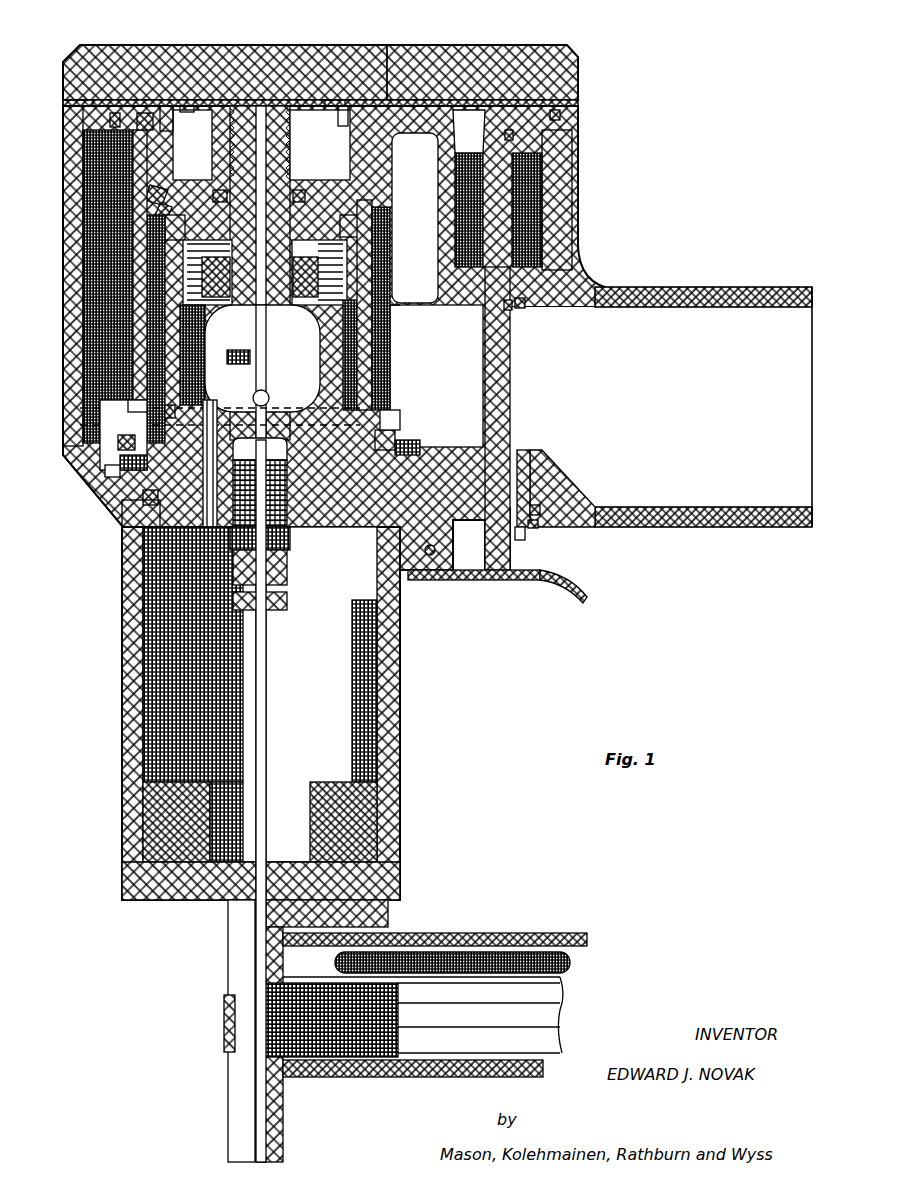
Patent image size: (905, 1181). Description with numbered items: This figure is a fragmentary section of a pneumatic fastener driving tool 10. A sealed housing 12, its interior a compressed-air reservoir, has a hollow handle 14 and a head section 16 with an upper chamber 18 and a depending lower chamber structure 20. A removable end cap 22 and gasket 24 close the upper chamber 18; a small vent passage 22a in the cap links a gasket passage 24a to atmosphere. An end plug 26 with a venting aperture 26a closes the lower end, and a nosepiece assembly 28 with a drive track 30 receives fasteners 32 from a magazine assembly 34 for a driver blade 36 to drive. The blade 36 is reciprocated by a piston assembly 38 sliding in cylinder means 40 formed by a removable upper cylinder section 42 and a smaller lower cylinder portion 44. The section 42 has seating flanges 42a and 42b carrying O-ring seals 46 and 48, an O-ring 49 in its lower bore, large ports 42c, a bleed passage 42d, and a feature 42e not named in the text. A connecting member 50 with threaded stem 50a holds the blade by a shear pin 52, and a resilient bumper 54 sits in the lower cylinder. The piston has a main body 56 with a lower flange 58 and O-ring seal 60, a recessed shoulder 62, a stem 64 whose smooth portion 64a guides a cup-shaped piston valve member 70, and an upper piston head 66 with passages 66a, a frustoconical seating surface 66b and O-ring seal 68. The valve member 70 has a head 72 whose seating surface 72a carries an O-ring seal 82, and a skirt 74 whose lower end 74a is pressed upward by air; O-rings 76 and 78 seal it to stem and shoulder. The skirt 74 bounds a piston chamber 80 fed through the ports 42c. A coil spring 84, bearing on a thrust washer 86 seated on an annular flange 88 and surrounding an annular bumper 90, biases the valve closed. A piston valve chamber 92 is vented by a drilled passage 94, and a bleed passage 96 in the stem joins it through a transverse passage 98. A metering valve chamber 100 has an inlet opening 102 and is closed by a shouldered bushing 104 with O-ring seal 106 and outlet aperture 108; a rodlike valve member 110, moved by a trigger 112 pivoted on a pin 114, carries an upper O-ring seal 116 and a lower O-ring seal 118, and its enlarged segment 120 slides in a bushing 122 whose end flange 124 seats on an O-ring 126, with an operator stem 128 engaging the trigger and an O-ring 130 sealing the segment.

The fastener driving tool 10 is at (513, 728).
The housing 12 is at (781, 533).
The hollow handle 14 is at (783, 287).
The head section 16 is at (122, 680).
The upper chamber 18 is at (78, 305).
The lower chamber structure 20 is at (398, 758).
The upper end cap 22 is at (543, 53).
The vent passage 22a is at (392, 62).
The gasket 24 is at (582, 103).
The passage 24a is at (337, 105).
The end plug 26 is at (135, 898).
The central aperture 26a is at (232, 910).
The nosepiece assembly 28 is at (228, 1090).
The drive track 30 is at (257, 942).
The fasteners 32 is at (268, 997).
The magazine assembly 34 is at (445, 925).
The driver blade 36 is at (266, 742).
The piston assembly 38 is at (317, 392).
The cylinder means 40 is at (197, 570).
The upper cylinder section 42 is at (143, 248).
The upper seating flange 42a is at (85, 107).
The lower seating flange 42b is at (135, 473).
The ports 42c is at (133, 407).
The bleed passage 42d is at (417, 443).
The body port 42e is at (395, 415).
The lower cylinder portion 44 is at (355, 738).
The O-ring seal 46 is at (110, 118).
The O-ring seal 48 is at (150, 497).
The O-ring 49 is at (118, 443).
The connecting member 50 is at (300, 563).
The threaded stem 50a is at (290, 540).
The shear pin 52 is at (300, 590).
The bumper 54 is at (155, 805).
The main body 56 is at (292, 560).
The annular flange 58 is at (150, 527).
The O-ring seal 60 is at (147, 517).
The recessed shoulder 62 is at (388, 430).
The stem portion 64 is at (285, 358).
The smooth cylindrical portion 64a is at (330, 187).
The upper piston head 66 is at (170, 112).
The passages 66a is at (187, 108).
The frustoconical seating surface 66b is at (163, 193).
The O-ring seal 68 is at (147, 110).
The piston valve member 70 is at (153, 277).
The valve head 72 is at (167, 223).
The frustoconical surface 72a is at (367, 190).
The skirt 74 is at (180, 352).
The lower end of skirt 74a is at (87, 477).
The upper O-ring seal 76 is at (213, 196).
The lower O-ring 78 is at (167, 410).
The piston chamber 80 is at (147, 327).
The O-ring seal 82 is at (167, 200).
The coil spring 84 is at (340, 260).
The thrust washer 86 is at (395, 317).
The annular flange 88 is at (357, 337).
The annular bumper 90 is at (345, 228).
The piston valve chamber 92 is at (390, 365).
The drilled passage 94 is at (207, 527).
The bleed passage 96 is at (266, 330).
The transverse passage 98 is at (227, 358).
The metering valve chamber 100 is at (530, 192).
The inlet opening 102 is at (525, 303).
The shouldered bushing 104 is at (540, 145).
The O-ring seal 106 is at (562, 117).
The outlet aperture 108 is at (488, 113).
The valve member 110 is at (505, 368).
The trigger 112 is at (475, 580).
The pin 114 is at (430, 556).
The upper O-ring seal 116 is at (513, 137).
The lower O-ring seal 118 is at (510, 308).
The enlarged cylindrical segment 120 is at (520, 452).
The bushing 122 is at (537, 457).
The lower end flange 124 is at (534, 528).
The O-ring 126 is at (540, 513).
The operator stem 128 is at (498, 580).
The O-ring 130 is at (520, 535).